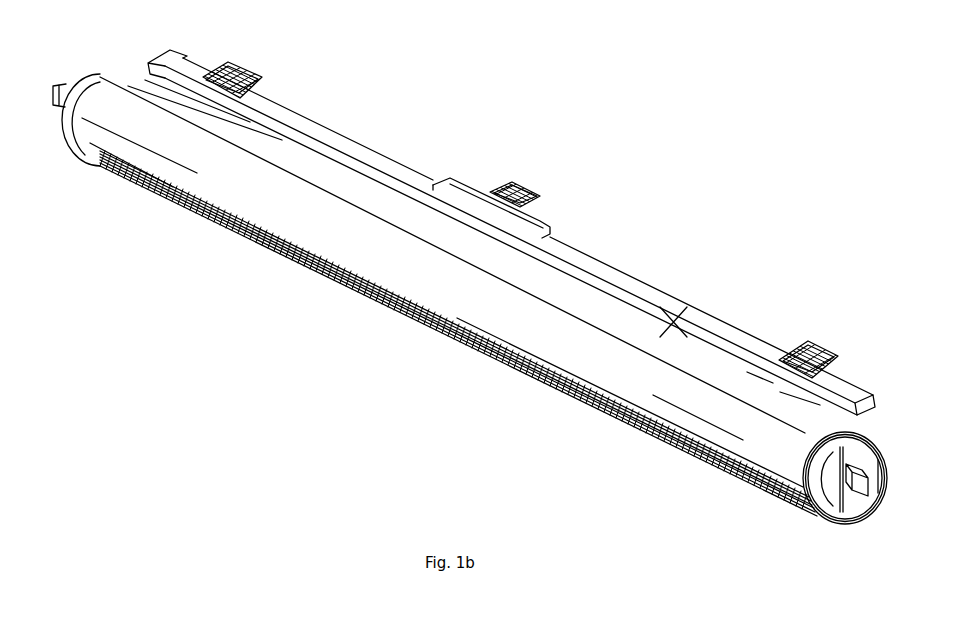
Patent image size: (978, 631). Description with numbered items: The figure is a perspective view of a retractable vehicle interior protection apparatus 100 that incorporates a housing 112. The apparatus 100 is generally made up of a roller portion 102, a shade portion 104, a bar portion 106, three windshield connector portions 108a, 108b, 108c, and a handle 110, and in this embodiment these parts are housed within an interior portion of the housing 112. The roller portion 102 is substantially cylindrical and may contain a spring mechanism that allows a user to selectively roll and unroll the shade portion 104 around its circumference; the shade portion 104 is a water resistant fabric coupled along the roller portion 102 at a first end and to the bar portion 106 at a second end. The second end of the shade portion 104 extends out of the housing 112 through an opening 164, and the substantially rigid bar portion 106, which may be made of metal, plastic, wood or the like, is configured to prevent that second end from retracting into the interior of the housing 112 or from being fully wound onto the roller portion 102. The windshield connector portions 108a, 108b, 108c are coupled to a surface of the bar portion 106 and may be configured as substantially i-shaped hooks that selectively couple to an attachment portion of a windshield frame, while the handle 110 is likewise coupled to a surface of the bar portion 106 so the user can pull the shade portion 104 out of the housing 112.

The retractable vehicle interior protection apparatus 100 is at (797, 118).
The roller portion 102 is at (887, 508).
The shade portion 104 is at (147, 83).
The bar portion 106 is at (655, 292).
The windshield connector portion 108a is at (242, 70).
The windshield connector portion 108b is at (504, 186).
The windshield connector portion 108c is at (813, 343).
The handle 110 is at (551, 228).
The housing 112 is at (422, 290).
The opening 164 is at (110, 82).